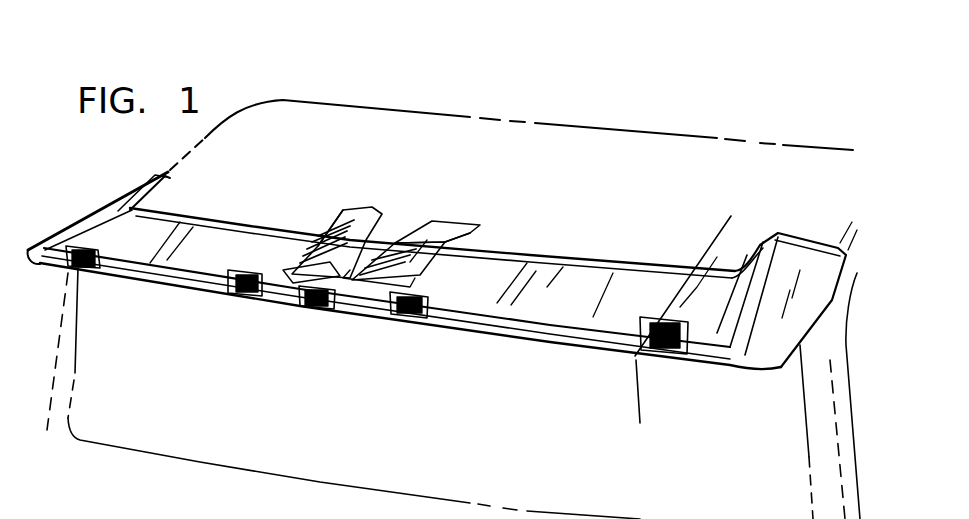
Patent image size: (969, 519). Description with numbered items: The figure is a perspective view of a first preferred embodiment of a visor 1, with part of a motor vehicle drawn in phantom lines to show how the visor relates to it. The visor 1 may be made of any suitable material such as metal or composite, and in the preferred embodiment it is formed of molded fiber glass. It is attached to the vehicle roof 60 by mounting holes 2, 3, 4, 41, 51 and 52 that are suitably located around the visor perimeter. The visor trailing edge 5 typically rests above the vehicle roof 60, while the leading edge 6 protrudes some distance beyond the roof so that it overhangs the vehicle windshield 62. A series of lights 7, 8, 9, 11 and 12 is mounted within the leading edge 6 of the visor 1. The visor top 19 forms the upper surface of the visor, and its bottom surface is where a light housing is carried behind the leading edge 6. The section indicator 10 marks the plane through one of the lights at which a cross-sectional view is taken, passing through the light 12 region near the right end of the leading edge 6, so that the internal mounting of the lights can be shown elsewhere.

The visor 1 is at (392, 213).
The mounting hole 2 is at (362, 220).
The mounting hole 3 is at (395, 245).
The mounting hole 4 is at (832, 327).
The visor trailing edge 5 is at (524, 251).
The leading edge 6 is at (200, 290).
The light 7 is at (72, 270).
The light 8 is at (232, 293).
The light 9 is at (316, 310).
The section line 10 is at (714, 229).
The light 11 is at (392, 320).
The light 12 is at (660, 360).
The visor top 19 is at (582, 313).
The mounting hole 41 is at (812, 243).
The mounting hole 51 is at (338, 238).
The mounting hole 52 is at (468, 233).
The vehicle roof 60 is at (600, 163).
The vehicle windshield 62 is at (255, 427).